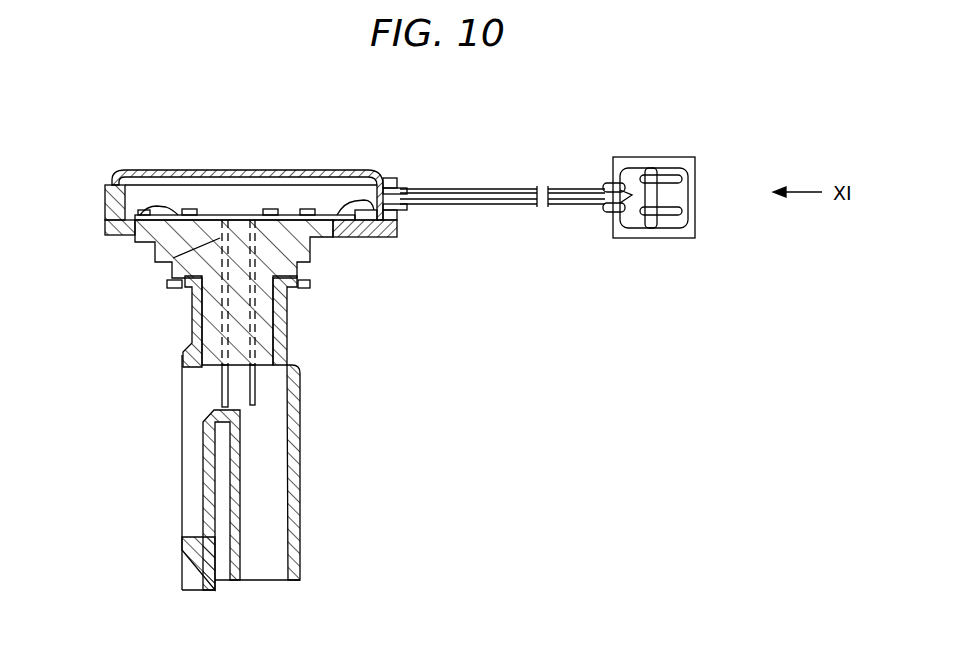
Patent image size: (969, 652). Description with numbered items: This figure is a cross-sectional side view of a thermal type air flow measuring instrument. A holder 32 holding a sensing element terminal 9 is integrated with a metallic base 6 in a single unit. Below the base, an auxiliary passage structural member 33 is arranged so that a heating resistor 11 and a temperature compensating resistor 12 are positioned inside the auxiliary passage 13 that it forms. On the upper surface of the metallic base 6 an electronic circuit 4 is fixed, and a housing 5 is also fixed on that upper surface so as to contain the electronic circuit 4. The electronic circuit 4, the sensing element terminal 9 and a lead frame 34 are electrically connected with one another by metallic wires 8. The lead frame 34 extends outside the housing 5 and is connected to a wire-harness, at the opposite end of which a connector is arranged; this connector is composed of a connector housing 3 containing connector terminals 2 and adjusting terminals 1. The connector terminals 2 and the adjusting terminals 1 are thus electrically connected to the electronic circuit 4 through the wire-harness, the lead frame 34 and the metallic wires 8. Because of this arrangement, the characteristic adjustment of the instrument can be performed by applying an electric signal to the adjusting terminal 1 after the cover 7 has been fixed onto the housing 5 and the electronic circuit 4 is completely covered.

The adjusting terminal 1 is at (632, 197).
The connector terminal 2 is at (678, 178).
The connector housing 3 is at (682, 158).
The electronic circuit 4 is at (222, 214).
The housing 5 is at (107, 186).
The metallic base 6 is at (103, 234).
The cover 7 is at (253, 172).
The metallic wire 8 is at (165, 207).
The sensing element terminal 9 is at (173, 270).
The heating resistor 11 is at (218, 386).
The temperature compensating resistor 12 is at (298, 420).
The auxiliary passage 13 is at (278, 393).
The holder 32 is at (270, 323).
The auxiliary passage structural member 33 is at (298, 537).
The lead frame 34 is at (397, 224).